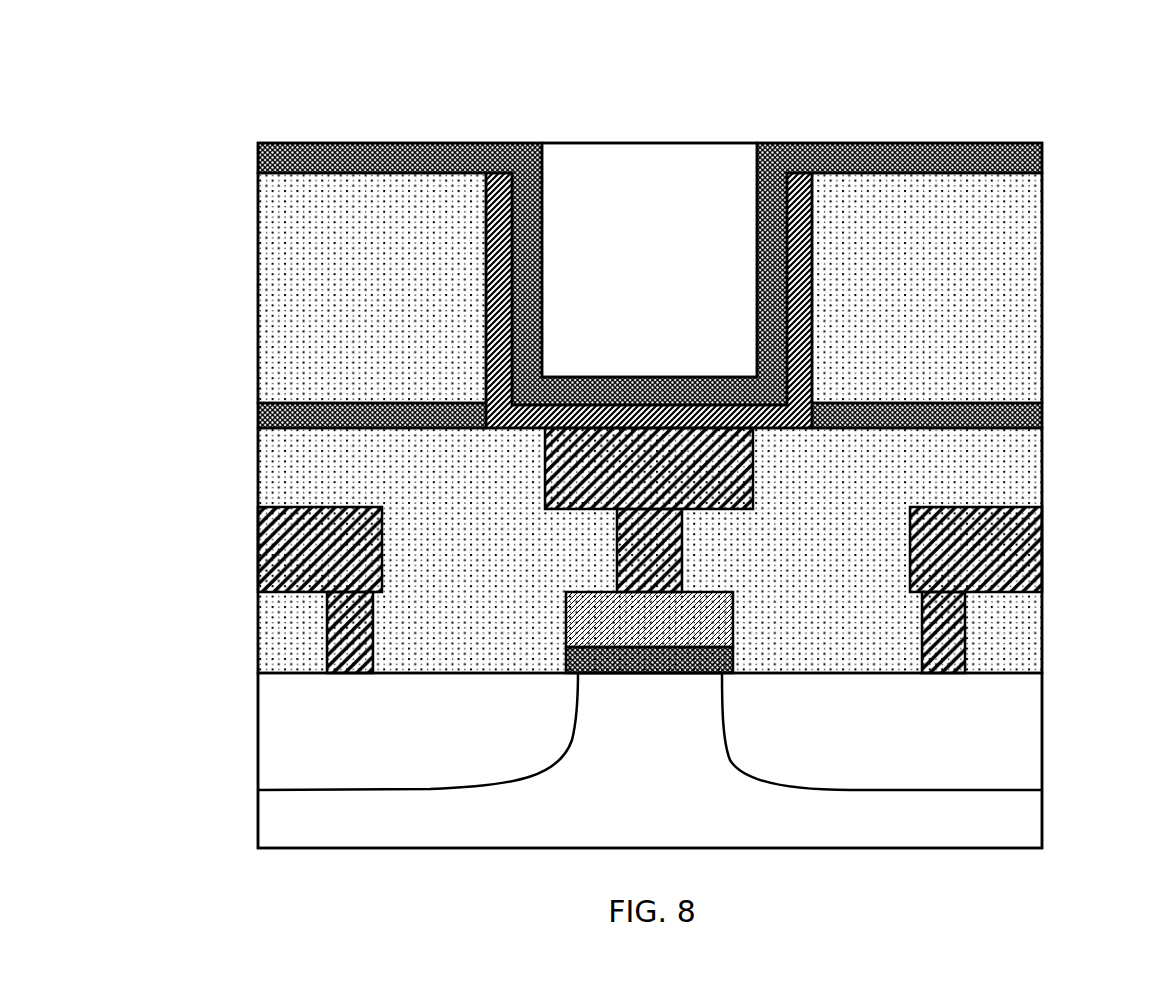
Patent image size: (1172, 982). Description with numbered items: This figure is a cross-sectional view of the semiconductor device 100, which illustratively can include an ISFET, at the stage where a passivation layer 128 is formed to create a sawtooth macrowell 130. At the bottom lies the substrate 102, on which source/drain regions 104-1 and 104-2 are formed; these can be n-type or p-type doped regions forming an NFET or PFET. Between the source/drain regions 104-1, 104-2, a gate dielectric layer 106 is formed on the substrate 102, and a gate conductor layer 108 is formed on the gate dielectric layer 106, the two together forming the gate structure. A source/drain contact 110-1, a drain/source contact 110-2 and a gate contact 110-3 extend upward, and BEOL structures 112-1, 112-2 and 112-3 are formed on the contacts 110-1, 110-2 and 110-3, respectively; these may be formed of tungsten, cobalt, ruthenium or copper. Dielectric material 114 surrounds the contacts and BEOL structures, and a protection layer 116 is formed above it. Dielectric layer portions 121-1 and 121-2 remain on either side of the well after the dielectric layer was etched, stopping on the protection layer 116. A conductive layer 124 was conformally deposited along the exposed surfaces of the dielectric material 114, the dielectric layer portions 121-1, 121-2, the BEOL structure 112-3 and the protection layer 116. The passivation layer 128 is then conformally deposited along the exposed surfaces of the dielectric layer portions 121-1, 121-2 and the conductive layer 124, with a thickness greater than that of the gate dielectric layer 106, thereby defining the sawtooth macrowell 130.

The semiconductor device 100 is at (627, 27).
The substrate 102 is at (631, 797).
The source/drain region 104-1 is at (388, 743).
The source/drain region 104-2 is at (863, 741).
The gate dielectric layer 106 is at (617, 673).
The gate conductor layer 108 is at (629, 632).
The source/drain contact 110-1 is at (327, 620).
The drain/source contact 110-2 is at (965, 617).
The gate contact 110-3 is at (617, 548).
The BEOL structure 112-1 is at (288, 562).
The BEOL structure 112-2 is at (943, 562).
The BEOL structure 112-3 is at (618, 480).
The dielectric material 114 is at (801, 565).
The protection layer 116 is at (1042, 416).
The dielectric layer portion 121-1 is at (344, 301).
The dielectric layer portion 121-2 is at (901, 301).
The conductive layer 124 is at (812, 360).
The passivation layer 128 is at (1042, 162).
The sawtooth macrowell 130 is at (760, 132).